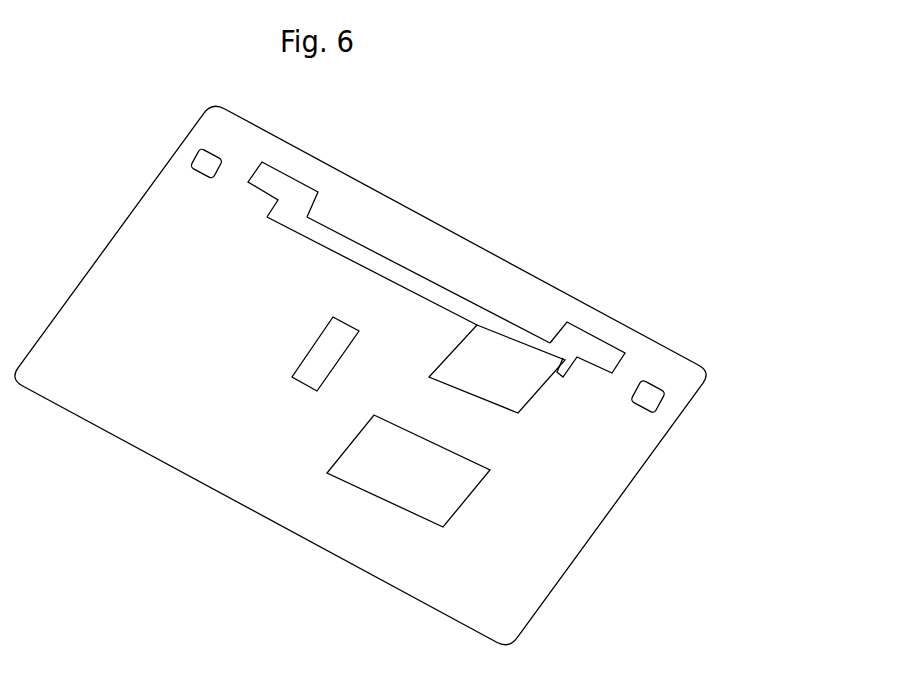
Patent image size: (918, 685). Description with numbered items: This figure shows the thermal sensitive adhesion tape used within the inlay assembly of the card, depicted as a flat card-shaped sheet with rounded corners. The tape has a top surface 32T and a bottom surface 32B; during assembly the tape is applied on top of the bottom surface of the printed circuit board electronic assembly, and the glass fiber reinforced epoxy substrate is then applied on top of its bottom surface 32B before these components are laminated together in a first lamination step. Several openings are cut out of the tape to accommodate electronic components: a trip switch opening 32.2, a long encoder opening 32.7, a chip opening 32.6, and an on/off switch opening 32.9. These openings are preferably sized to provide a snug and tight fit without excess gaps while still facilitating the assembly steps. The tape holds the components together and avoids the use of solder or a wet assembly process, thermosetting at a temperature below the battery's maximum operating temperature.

The bottom surface 32B is at (497, 247).
The top surface 32T is at (320, 492).
The trip switch opening 32.2 is at (263, 157).
The encoder opening 32.7 is at (388, 225).
The chip opening 32.6 is at (433, 486).
The on/off switch opening 32.9 is at (368, 462).